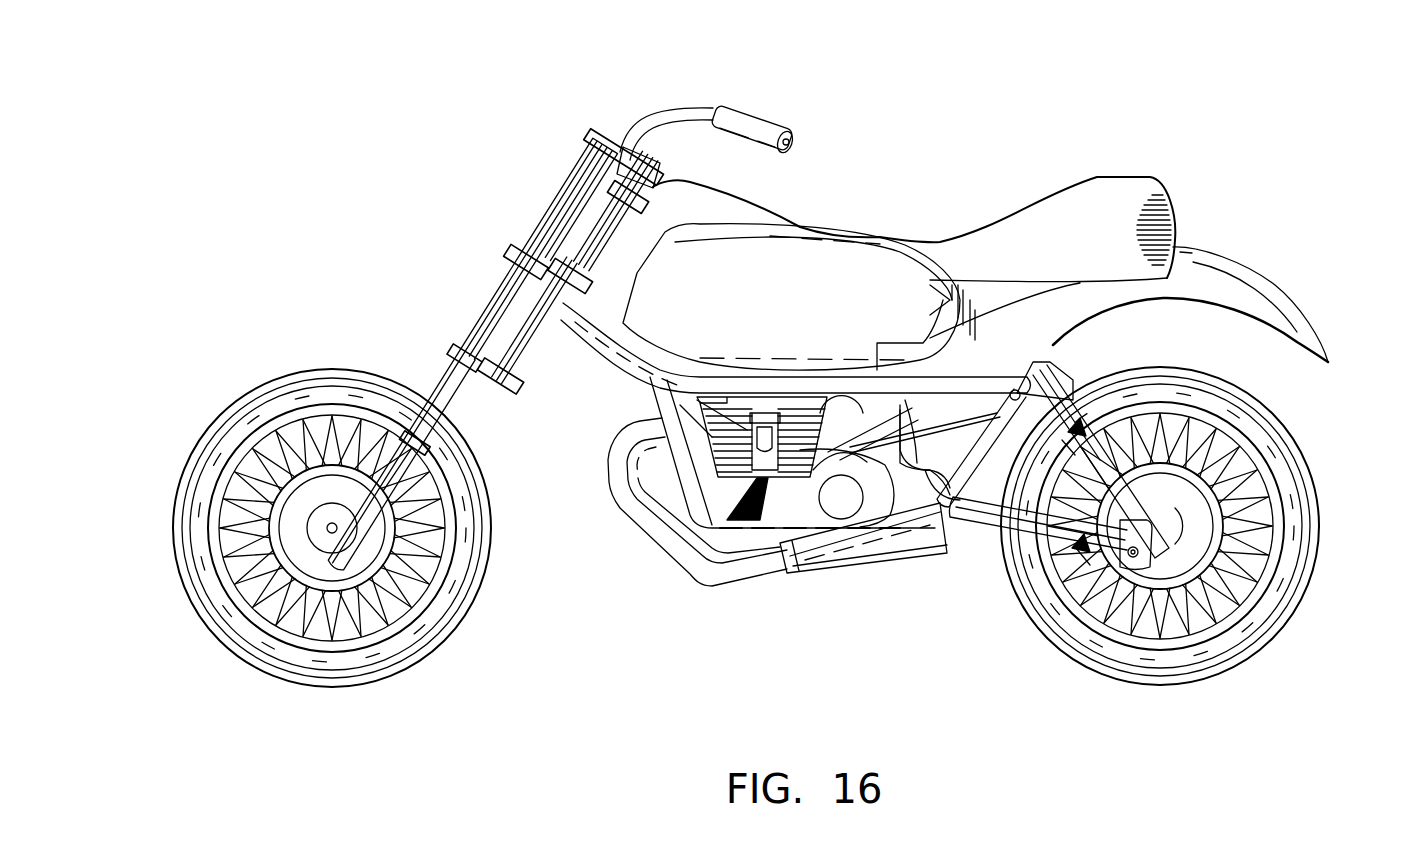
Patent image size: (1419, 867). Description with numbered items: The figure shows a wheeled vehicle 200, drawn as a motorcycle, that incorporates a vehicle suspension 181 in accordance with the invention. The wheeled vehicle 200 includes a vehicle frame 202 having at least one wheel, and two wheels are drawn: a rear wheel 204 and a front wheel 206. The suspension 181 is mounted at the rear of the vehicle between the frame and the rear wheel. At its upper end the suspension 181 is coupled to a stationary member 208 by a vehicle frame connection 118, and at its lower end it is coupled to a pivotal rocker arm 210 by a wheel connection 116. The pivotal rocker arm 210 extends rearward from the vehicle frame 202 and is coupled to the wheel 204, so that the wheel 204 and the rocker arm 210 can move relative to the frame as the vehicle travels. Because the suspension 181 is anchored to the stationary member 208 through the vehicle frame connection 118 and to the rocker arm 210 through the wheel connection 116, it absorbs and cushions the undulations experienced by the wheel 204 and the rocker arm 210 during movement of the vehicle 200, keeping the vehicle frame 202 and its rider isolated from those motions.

The wheeled vehicle 200 is at (996, 149).
The vehicle frame 202 is at (858, 385).
The wheel 204 is at (1280, 470).
The wheel 206 is at (260, 422).
The stationary member 208 is at (1020, 375).
The pivotal rocker arm 210 is at (990, 513).
The wheel connection 116 is at (1133, 560).
The vehicle frame connection 118 is at (1037, 373).
The vehicle suspension 181 is at (1113, 437).